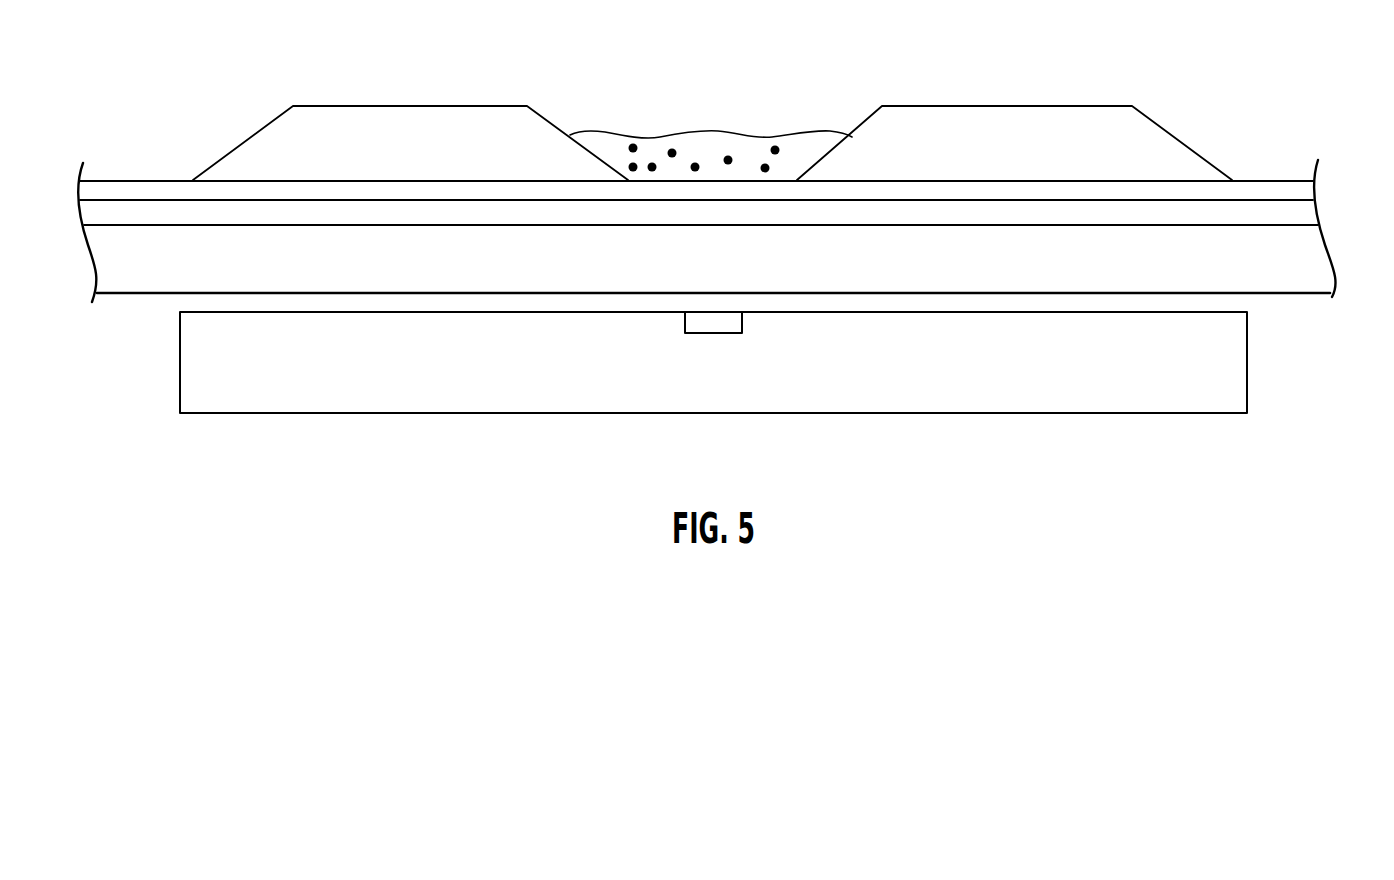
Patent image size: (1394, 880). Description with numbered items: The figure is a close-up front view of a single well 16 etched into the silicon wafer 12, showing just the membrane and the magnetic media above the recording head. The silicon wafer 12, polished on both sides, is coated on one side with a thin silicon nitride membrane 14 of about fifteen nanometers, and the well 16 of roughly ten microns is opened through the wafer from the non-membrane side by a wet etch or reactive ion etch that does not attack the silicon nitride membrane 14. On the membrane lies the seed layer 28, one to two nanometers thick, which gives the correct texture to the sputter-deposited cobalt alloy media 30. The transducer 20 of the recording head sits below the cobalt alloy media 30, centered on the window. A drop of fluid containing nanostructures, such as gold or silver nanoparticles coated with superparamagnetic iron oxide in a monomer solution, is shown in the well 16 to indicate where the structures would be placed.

The silicon wafer 12 is at (362, 117).
The silicon nitride membrane 14 is at (1305, 190).
The well 16 is at (702, 98).
The transducer 20 is at (712, 323).
The seed layer 28 is at (1310, 215).
The cobalt alloy media 30 is at (1305, 267).